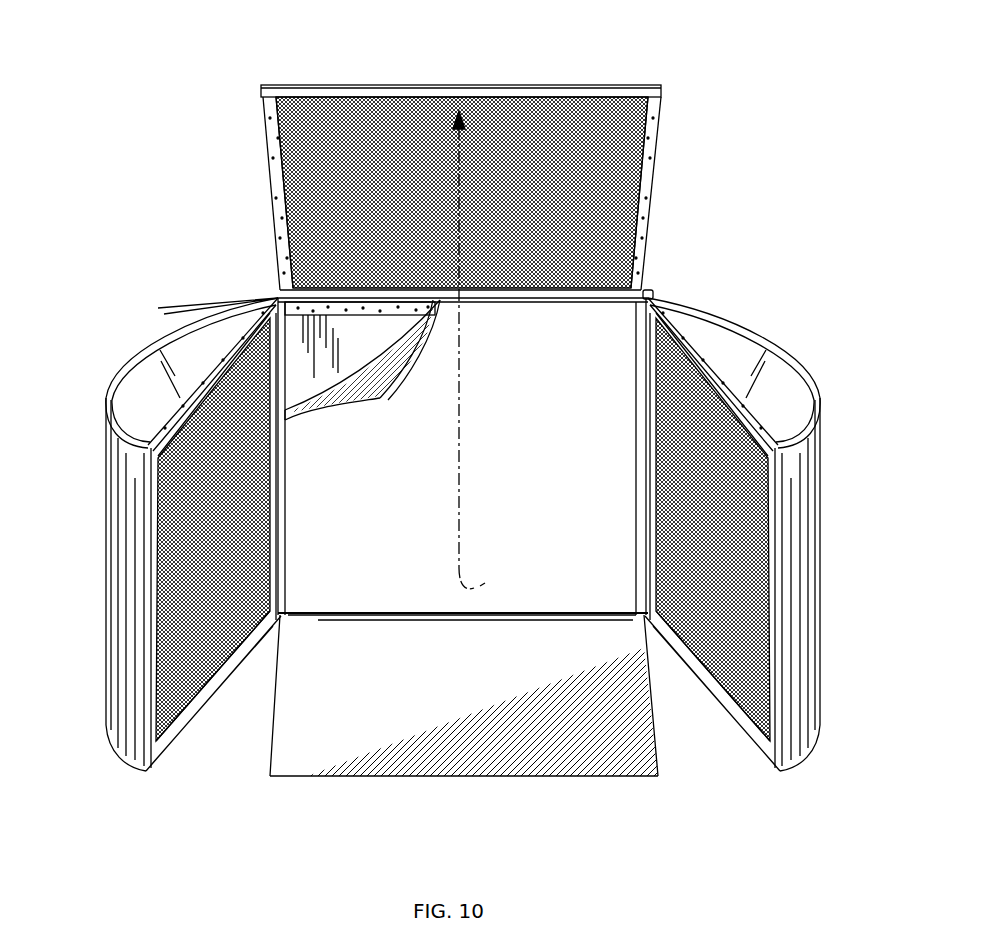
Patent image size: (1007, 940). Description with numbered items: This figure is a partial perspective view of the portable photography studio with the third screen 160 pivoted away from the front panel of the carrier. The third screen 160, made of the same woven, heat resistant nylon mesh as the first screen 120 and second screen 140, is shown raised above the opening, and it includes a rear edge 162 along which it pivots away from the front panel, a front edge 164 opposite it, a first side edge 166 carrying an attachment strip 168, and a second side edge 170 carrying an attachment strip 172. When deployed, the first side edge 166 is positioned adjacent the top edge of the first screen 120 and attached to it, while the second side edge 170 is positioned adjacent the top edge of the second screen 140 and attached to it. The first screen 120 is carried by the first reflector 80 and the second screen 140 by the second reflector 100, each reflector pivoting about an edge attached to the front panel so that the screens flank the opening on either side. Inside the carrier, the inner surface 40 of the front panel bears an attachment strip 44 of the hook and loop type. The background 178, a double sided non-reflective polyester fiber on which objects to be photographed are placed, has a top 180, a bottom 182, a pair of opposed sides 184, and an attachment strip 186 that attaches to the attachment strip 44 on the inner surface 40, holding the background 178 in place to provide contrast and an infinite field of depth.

The inner surface 40 is at (287, 362).
The attachment strip 44 is at (273, 290).
The first reflector 80 is at (755, 330).
The second reflector 100 is at (127, 348).
The first screen 120 is at (740, 540).
The second screen 140 is at (170, 535).
The third screen 160 is at (600, 150).
The rear edge 162 is at (598, 278).
The front edge 164 is at (418, 76).
The first side edge 166 is at (650, 90).
The attachment strip 168 is at (640, 163).
The second side edge 170 is at (260, 125).
The attachment strip 172 is at (267, 178).
The background 178 is at (320, 582).
The top 180 is at (645, 285).
The bottom 182 is at (588, 770).
The opposed sides 184 is at (262, 733).
The attachment strip 186 is at (372, 392).